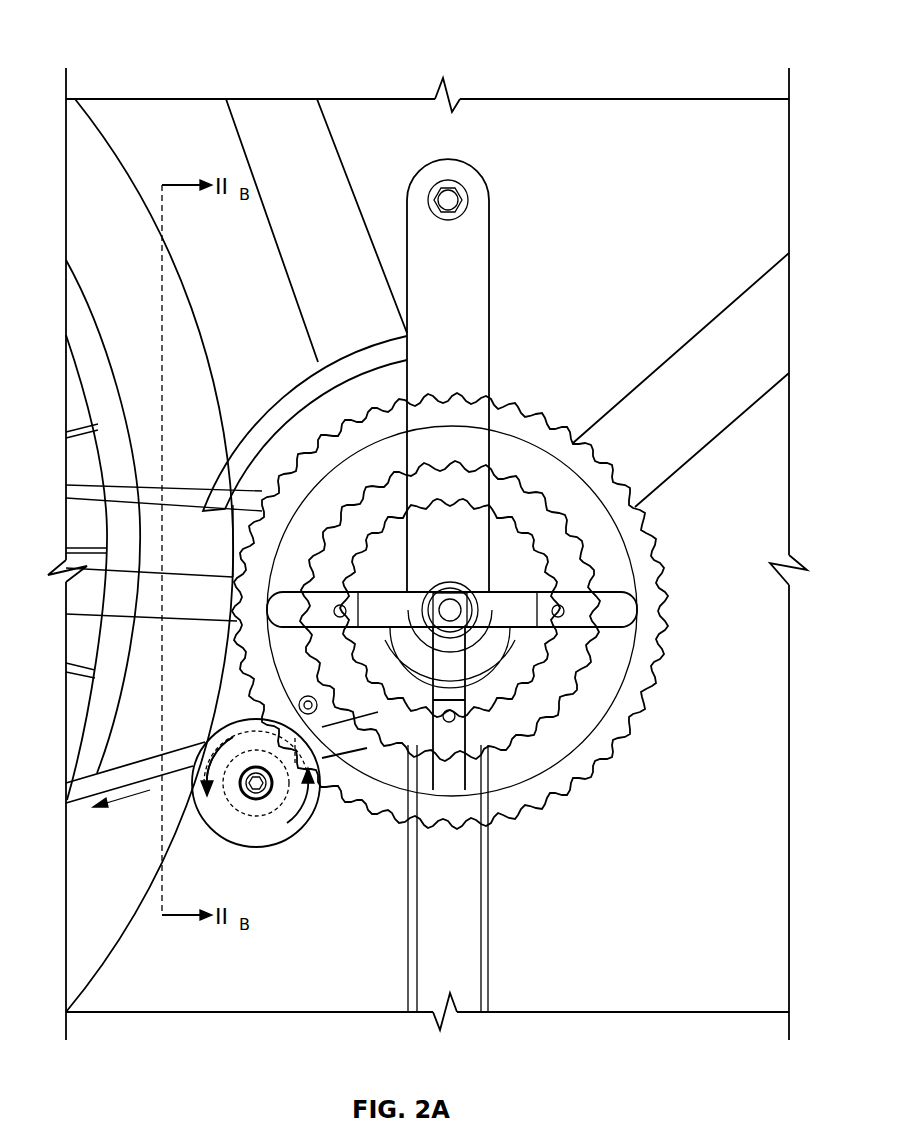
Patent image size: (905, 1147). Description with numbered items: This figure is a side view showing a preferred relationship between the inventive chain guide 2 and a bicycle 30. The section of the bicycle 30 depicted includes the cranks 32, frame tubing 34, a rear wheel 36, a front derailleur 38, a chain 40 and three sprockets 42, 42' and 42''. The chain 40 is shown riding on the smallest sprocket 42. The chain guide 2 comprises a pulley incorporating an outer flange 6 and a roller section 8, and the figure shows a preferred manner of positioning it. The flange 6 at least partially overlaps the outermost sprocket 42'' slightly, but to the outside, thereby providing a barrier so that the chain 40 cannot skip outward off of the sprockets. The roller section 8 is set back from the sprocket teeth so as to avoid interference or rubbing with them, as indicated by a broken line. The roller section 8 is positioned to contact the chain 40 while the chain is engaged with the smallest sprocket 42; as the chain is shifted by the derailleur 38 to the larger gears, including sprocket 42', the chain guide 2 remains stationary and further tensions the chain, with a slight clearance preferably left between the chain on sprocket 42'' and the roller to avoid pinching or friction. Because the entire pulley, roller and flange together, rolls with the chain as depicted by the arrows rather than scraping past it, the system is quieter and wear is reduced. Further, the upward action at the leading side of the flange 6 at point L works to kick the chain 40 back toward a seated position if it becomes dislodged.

The bicycle 30 is at (99, 48).
The rear wheel 36 is at (142, 170).
The frame tubing 34 is at (325, 150).
The cranks 32 is at (470, 252).
The front derailleur 38 is at (345, 360).
The outermost sprocket 42'' is at (484, 611).
The sprocket 42' is at (510, 611).
The smallest sprocket 42 is at (470, 644).
The chain 40 is at (77, 795).
The chain guide 2 is at (299, 837).
The outer flange 6 is at (255, 850).
The roller section 8 is at (226, 805).
The point L is at (333, 795).